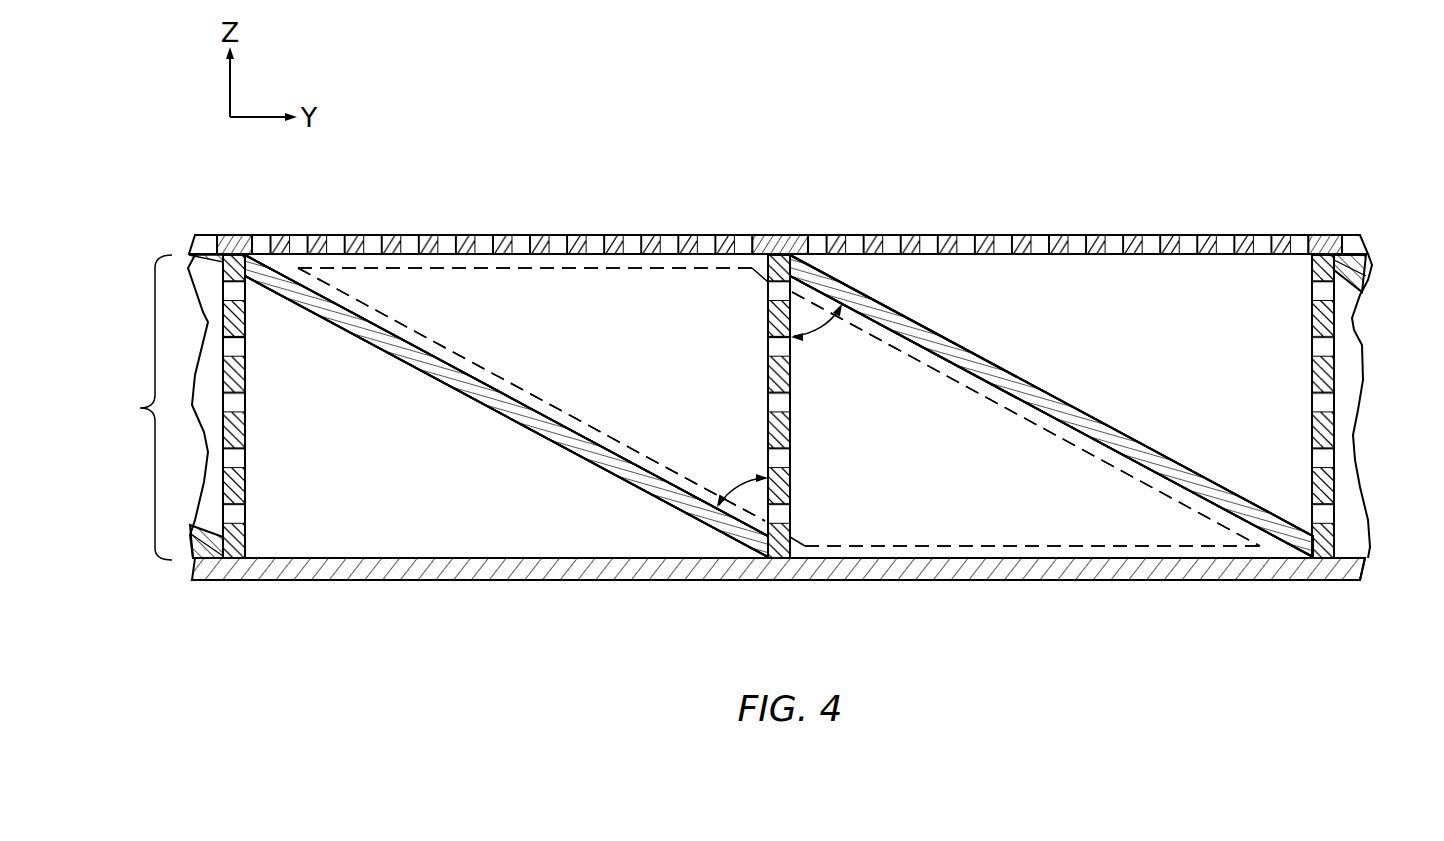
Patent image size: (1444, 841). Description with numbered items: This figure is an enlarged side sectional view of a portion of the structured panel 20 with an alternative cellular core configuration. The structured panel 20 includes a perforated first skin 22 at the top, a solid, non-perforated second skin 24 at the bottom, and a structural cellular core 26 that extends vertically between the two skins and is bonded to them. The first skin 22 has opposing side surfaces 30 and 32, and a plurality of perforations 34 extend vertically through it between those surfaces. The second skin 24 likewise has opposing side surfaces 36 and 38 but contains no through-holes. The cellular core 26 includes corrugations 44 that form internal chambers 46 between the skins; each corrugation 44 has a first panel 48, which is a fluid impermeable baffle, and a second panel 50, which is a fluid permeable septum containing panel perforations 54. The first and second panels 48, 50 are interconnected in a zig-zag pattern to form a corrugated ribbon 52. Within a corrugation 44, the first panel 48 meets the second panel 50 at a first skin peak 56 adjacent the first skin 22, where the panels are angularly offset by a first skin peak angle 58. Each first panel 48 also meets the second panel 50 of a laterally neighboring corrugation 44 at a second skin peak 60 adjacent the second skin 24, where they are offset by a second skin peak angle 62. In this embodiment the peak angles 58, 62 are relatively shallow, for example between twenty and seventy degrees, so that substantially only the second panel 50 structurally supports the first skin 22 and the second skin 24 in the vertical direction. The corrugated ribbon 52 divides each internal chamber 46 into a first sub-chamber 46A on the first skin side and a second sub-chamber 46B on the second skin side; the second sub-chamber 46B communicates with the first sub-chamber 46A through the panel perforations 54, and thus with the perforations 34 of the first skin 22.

The structured panel 20 is at (753, 308).
The first skin 22 is at (176, 240).
The second skin 24 is at (176, 574).
The cellular core 26 is at (138, 407).
The side surface of first skin 30 is at (1308, 259).
The side surface of first skin 32 is at (1322, 236).
The perforations 34 is at (594, 237).
The side surface of second skin 36 is at (1274, 557).
The side surface of second skin 38 is at (1288, 581).
The corrugations 44 is at (347, 303).
The internal chambers 46 is at (497, 530).
The first sub-chamber 46A is at (562, 348).
The second sub-chamber 46B is at (398, 483).
The first panel 48 is at (665, 507).
The second panel 50 is at (246, 494).
The corrugated ribbon 52 is at (1352, 333).
The panel perforations 54 is at (245, 347).
The first skin peak 56 is at (777, 244).
The first skin peak angle 58 is at (838, 312).
The second skin peak 60 is at (780, 570).
The second skin peak angle 62 is at (738, 483).